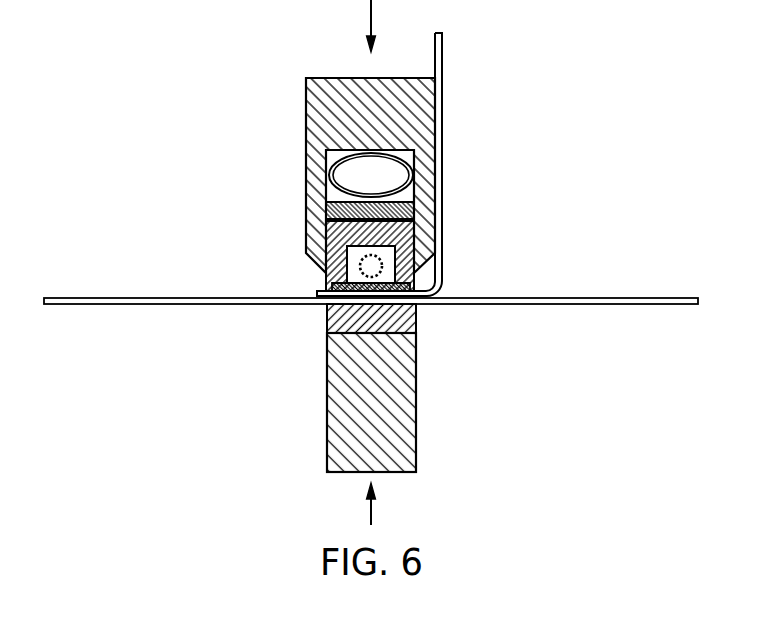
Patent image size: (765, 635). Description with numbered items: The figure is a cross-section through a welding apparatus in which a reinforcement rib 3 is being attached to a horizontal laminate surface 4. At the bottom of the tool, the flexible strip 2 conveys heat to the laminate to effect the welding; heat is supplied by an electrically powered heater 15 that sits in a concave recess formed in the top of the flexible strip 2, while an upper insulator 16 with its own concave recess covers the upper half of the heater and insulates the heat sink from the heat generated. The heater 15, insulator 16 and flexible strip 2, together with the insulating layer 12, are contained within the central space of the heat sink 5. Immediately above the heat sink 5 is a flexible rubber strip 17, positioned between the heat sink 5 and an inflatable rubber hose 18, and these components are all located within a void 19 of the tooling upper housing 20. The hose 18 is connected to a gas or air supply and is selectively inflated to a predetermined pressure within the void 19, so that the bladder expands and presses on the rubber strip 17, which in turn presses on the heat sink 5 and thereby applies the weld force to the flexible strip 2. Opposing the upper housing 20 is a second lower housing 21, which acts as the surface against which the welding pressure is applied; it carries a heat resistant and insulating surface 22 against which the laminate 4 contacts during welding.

The flexible strip 2 is at (440, 283).
The reinforcement rib 3 is at (443, 113).
The laminate surface 4 is at (557, 305).
The heat sink 5 is at (335, 237).
The insulating layer 12 is at (332, 286).
The electrical heater 15 is at (383, 255).
The upper insulator 16 is at (392, 256).
The flexible rubber strip 17 is at (338, 212).
The inflatable rubber hose 18 is at (306, 133).
The void 19 is at (410, 156).
The upper housing 20 is at (340, 78).
The lower housing 21 is at (327, 460).
The heat resistant and insulating surface 22 is at (417, 318).